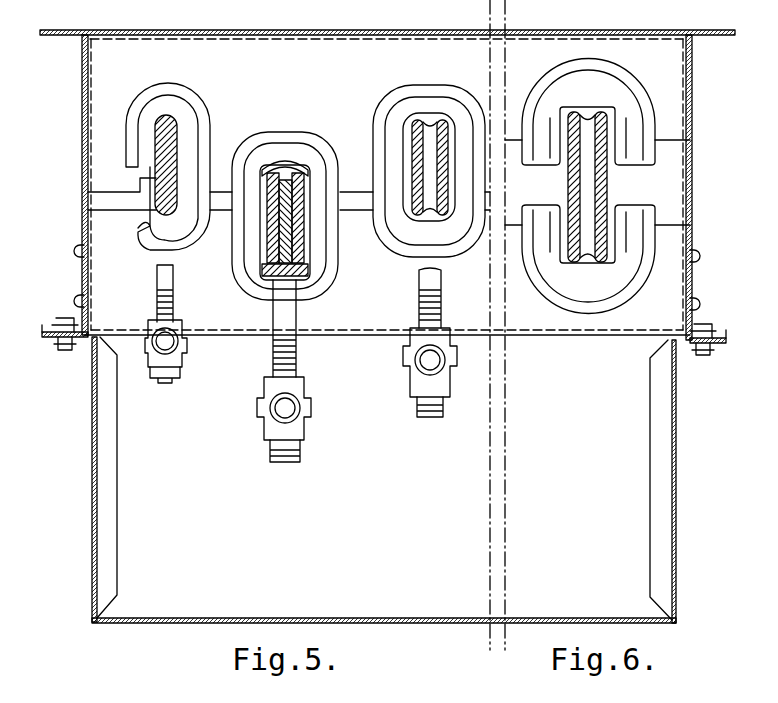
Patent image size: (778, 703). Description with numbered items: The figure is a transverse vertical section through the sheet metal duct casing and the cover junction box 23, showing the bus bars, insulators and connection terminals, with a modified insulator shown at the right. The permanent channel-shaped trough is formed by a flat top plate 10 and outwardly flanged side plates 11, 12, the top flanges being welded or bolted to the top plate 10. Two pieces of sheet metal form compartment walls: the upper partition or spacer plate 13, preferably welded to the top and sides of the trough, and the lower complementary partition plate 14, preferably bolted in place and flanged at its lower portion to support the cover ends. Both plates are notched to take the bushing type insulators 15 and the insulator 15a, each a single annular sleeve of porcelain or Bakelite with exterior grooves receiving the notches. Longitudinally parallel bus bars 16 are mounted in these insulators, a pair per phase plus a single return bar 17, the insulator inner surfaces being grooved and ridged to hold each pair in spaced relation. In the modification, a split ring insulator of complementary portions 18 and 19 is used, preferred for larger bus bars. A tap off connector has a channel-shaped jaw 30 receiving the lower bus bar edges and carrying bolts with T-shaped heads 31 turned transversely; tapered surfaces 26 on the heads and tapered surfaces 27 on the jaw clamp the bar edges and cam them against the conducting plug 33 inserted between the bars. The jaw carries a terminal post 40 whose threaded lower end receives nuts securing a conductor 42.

In FIG. 5, the flat top plate 10 is at (300, 32).
In FIG. 5, the side plate 11 is at (80, 162).
In FIG. 6, the side plate 12 is at (692, 183).
In FIG. 5, the upper partition or spacer plate 13 is at (338, 49).
In FIG. 6, the upper partition or spacer plate 13 is at (559, 53).
In FIG. 5, the lower complementary partition plate 14 is at (258, 320).
In FIG. 6, the lower complementary partition plate 14 is at (548, 325).
In FIG. 5, the bushing type insulator 15 is at (250, 137).
In FIG. 5, the insulator 15a is at (183, 72).
In FIG. 5, the bus bar 16 is at (396, 130).
In FIG. 6, the bus bar 16 is at (606, 190).
In FIG. 5, the bus bar core 17 is at (155, 120).
In FIG. 6, the complementary portion of split ring insulator 18 is at (615, 87).
In FIG. 6, the complementary portion of split ring insulator 19 is at (610, 295).
In FIG. 5, the junction box 23 is at (135, 525).
In FIG. 5, the tapered surfaces of heads 26 is at (306, 178).
In FIG. 5, the tapered surfaces of jaw 27 is at (322, 263).
In FIG. 5, the channel-shaped jaw 30 is at (246, 291).
In FIG. 5, the T-shaped head 31 is at (284, 155).
In FIG. 5, the plug 33 is at (288, 217).
In FIG. 5, the terminal post 40 is at (172, 281).
In FIG. 5, the conductor 42 is at (180, 345).